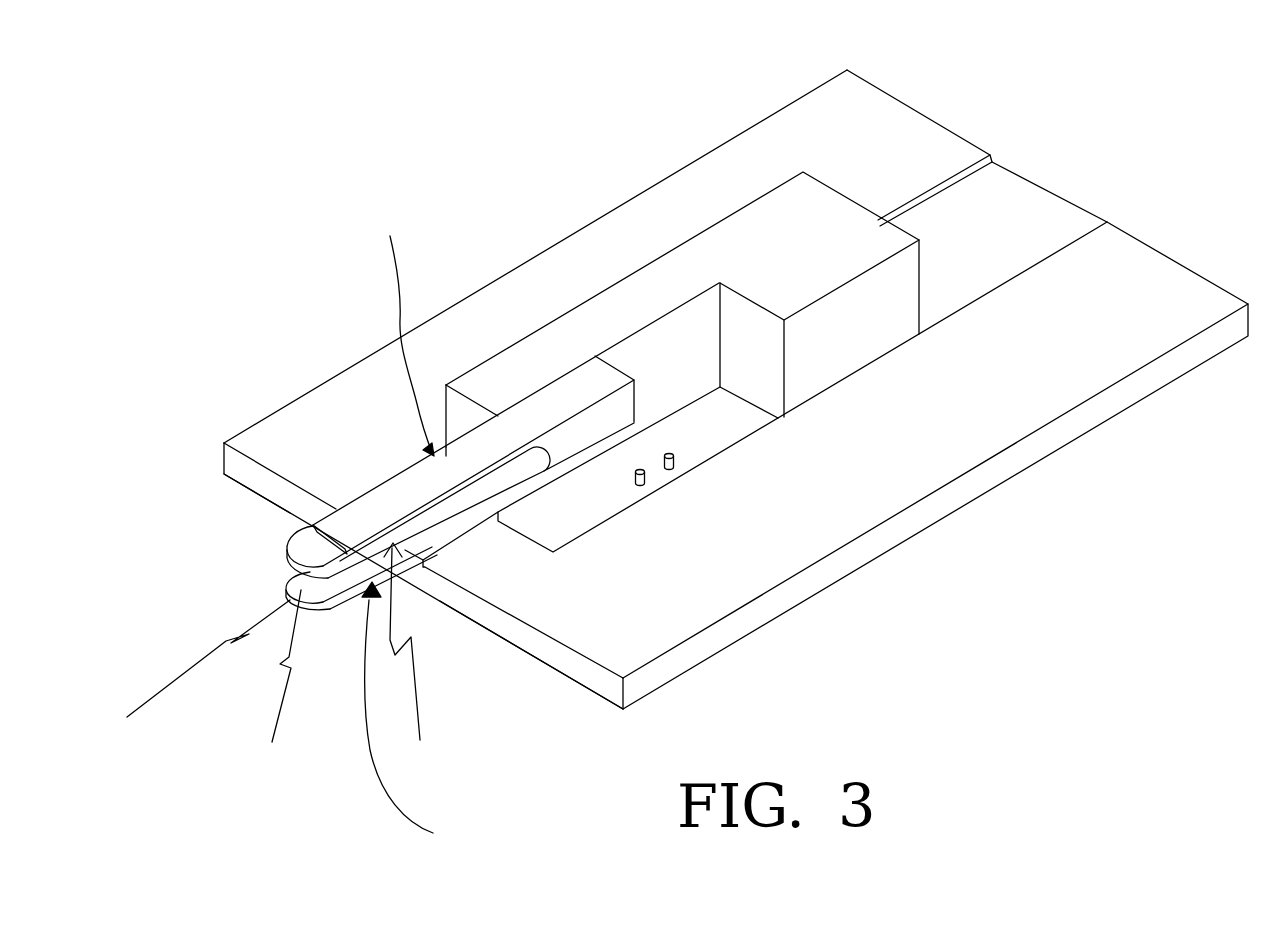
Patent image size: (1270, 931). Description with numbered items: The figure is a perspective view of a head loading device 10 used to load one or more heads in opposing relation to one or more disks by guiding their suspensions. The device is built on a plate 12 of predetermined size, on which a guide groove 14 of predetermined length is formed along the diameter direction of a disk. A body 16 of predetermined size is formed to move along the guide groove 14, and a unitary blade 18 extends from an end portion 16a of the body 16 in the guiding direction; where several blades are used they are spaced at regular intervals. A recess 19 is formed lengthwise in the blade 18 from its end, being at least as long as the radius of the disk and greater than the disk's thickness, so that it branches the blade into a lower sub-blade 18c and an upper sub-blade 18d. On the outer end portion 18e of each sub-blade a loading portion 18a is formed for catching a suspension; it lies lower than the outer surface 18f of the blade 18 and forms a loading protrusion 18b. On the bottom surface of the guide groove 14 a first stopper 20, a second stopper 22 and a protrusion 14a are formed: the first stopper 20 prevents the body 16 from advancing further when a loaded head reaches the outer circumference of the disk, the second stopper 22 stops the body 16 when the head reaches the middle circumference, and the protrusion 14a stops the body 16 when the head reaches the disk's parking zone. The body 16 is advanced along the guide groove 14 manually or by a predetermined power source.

The head loading device 10 is at (904, 85).
The plate 12 is at (940, 135).
The guide groove 14 is at (1047, 220).
The protrusion 14a is at (545, 545).
The body 16 is at (772, 206).
The end portion of the body 16a is at (477, 403).
The unitary blade 18 is at (407, 470).
The loading portion 18a is at (292, 549).
The loading protrusion 18b is at (315, 522).
The lower sub-blade 18c is at (354, 594).
The upper sub-blade 18d is at (381, 472).
The outer end portion of the sub-blade 18e is at (201, 697).
The outer surface of the blade 18f is at (410, 541).
The recess 19 is at (410, 661).
The first stopper 20 is at (676, 462).
The second stopper 22 is at (645, 482).